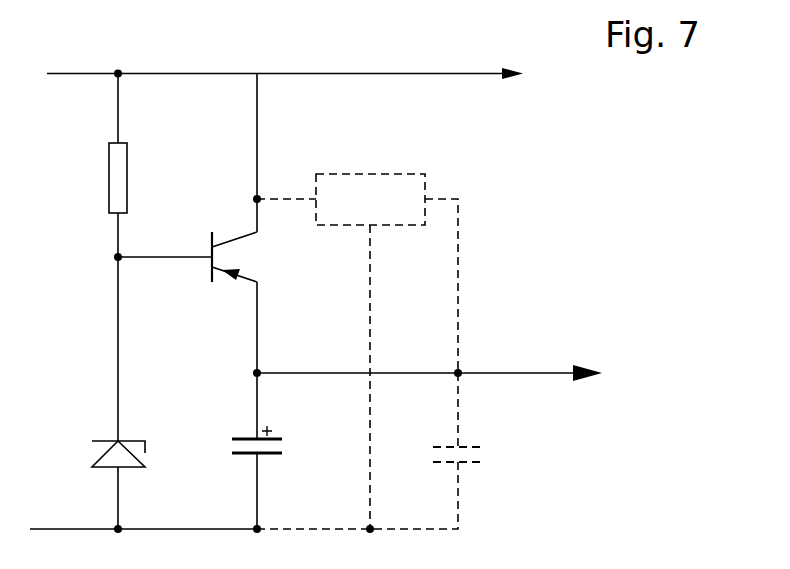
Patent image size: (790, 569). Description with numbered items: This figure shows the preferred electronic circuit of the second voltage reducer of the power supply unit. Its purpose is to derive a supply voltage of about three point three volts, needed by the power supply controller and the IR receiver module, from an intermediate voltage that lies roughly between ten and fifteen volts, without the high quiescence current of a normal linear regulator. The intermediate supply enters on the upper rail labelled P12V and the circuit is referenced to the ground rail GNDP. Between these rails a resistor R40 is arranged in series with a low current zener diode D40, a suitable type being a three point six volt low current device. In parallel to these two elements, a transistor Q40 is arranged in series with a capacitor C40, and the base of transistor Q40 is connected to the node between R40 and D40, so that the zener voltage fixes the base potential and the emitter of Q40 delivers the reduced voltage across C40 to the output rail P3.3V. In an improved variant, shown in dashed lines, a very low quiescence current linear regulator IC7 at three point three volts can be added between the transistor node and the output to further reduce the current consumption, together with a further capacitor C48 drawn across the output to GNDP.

The resistor R40 is at (140, 178).
The transistor Q40 is at (250, 257).
The very low quiescence current linear regulator IC7 is at (357, 351).
The capacitor C40 is at (282, 439).
The capacitor C48 is at (483, 417).
The low current zener diode D40 is at (141, 454).
The 12V power supply line P12V is at (285, 62).
The 3.3V power supply line P3.3V is at (429, 365).
The ground line GNDP is at (143, 515).